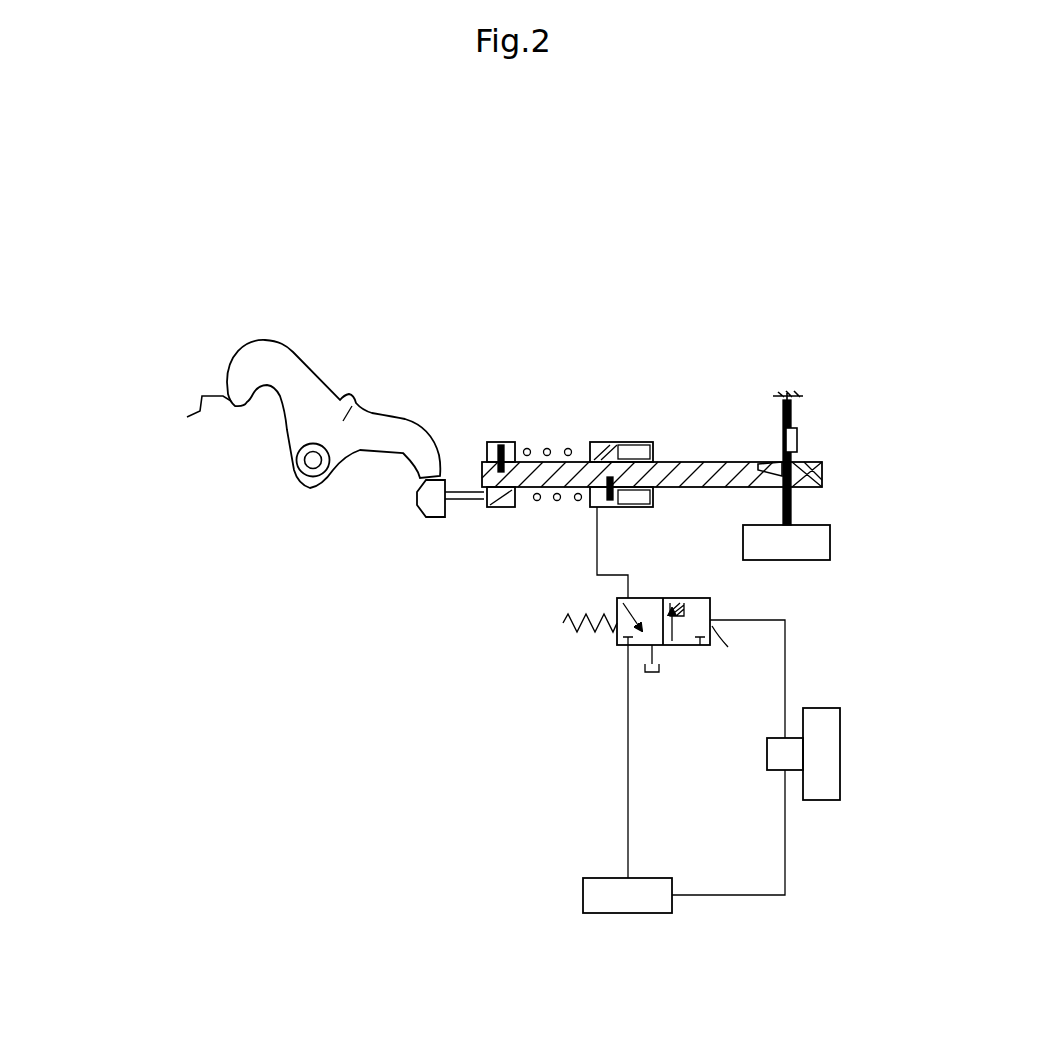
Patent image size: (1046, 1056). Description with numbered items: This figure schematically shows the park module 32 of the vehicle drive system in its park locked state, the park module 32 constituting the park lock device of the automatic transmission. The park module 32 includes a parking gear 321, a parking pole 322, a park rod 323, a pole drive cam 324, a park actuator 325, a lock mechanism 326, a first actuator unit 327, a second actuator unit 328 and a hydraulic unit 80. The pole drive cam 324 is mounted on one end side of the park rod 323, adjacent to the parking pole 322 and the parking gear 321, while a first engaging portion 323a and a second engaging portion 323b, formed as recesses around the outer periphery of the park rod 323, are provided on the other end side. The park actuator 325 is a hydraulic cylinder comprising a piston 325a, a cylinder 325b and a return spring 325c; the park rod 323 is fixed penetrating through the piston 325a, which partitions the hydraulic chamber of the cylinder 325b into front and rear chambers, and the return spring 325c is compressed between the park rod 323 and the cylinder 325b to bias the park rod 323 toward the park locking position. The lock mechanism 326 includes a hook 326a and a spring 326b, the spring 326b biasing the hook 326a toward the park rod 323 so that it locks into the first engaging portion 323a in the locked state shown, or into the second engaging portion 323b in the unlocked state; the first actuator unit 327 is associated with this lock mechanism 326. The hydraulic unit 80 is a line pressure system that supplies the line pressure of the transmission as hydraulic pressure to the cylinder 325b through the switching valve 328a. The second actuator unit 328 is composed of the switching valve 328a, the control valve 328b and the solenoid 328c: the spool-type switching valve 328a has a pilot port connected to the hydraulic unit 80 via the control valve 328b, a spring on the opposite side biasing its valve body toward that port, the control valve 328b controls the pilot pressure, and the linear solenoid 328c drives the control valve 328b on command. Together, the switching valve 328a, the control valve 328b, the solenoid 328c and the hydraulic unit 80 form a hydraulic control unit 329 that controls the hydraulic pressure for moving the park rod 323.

The park module 32 is at (133, 331).
The parking gear 321 is at (215, 388).
The parking pole 322 is at (318, 368).
The park rod 323 is at (687, 461).
The first engaging portion 323a is at (822, 489).
The second engaging portion 323b is at (760, 464).
The pole drive cam 324 is at (413, 504).
The park actuator 325 is at (580, 396).
The piston 325a is at (613, 455).
The cylinder 325b is at (598, 509).
The return spring 325c is at (547, 448).
The lock mechanism 326 is at (890, 405).
The hook 326a is at (798, 440).
The spring 326b is at (795, 406).
The first actuator unit 327 is at (830, 542).
The second actuator unit 328 is at (545, 757).
The switching valve 328a is at (683, 646).
The control valve 328b is at (773, 772).
The solenoid 328c is at (840, 750).
The hydraulic control unit 329 is at (448, 628).
The hydraulic unit 80 is at (583, 895).